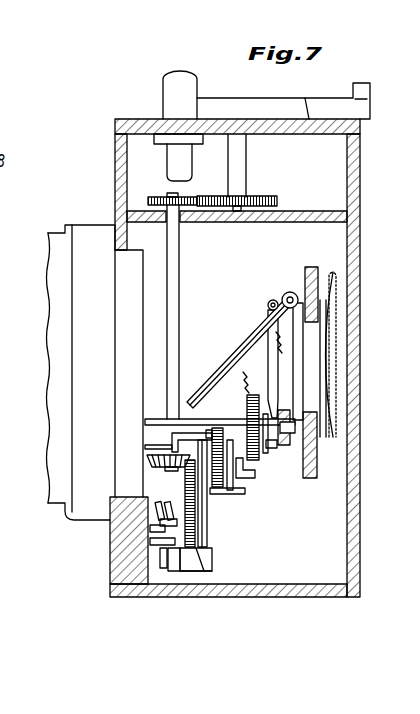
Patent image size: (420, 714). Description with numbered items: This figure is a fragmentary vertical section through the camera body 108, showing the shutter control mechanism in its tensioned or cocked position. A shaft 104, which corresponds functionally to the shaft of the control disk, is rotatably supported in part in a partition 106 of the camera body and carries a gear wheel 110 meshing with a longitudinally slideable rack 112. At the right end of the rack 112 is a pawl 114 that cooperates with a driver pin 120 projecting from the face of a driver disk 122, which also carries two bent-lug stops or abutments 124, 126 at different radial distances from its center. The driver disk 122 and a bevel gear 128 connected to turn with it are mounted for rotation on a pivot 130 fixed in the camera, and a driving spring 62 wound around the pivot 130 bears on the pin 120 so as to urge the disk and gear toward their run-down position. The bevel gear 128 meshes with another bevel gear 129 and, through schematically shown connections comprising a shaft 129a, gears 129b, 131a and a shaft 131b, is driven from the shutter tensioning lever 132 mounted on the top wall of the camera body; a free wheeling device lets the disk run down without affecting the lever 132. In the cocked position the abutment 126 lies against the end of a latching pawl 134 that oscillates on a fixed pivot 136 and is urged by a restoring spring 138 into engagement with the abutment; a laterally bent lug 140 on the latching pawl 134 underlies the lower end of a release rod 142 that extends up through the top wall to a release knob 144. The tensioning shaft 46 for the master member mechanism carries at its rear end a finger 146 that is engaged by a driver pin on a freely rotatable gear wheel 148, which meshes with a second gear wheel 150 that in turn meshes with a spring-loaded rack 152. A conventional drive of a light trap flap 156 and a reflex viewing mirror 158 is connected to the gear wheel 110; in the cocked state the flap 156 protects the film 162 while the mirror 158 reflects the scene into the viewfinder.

The camera body 108 is at (117, 147).
The release knob 144 is at (175, 98).
The shutter tensioning lever 132 is at (262, 107).
The release rod 142 is at (177, 163).
The shaft 131b is at (243, 165).
The gear 129b is at (148, 200).
The gear 131a is at (263, 197).
The shaft 129a is at (173, 265).
The tensioning shaft 46 is at (146, 450).
The finger 146 is at (148, 427).
The shaft 104 is at (147, 447).
The second gear wheel 150 is at (180, 418).
The gear wheel 148 is at (207, 427).
The bevel gear 129 is at (153, 462).
The stop or abutment 124 is at (188, 470).
The driver disk 122 is at (205, 535).
The pivot 130 is at (150, 510).
The driving spring 62 is at (150, 517).
The laterally bent lug 140 is at (153, 528).
The fixed pivot 136 is at (167, 560).
The restoring spring 138 is at (165, 565).
The latching pawl 134 is at (193, 562).
The bevel gear 128 is at (190, 550).
The stop or abutment 126 is at (213, 567).
The rack 152 is at (217, 510).
The driver pin 120 is at (220, 507).
The pawl 114 is at (236, 482).
The gear wheel 110 is at (248, 410).
The rack 112 is at (268, 455).
The partition 106 is at (284, 448).
The light trap flap 156 is at (296, 370).
The film 162 is at (322, 382).
The reflex viewing mirror 158 is at (253, 340).